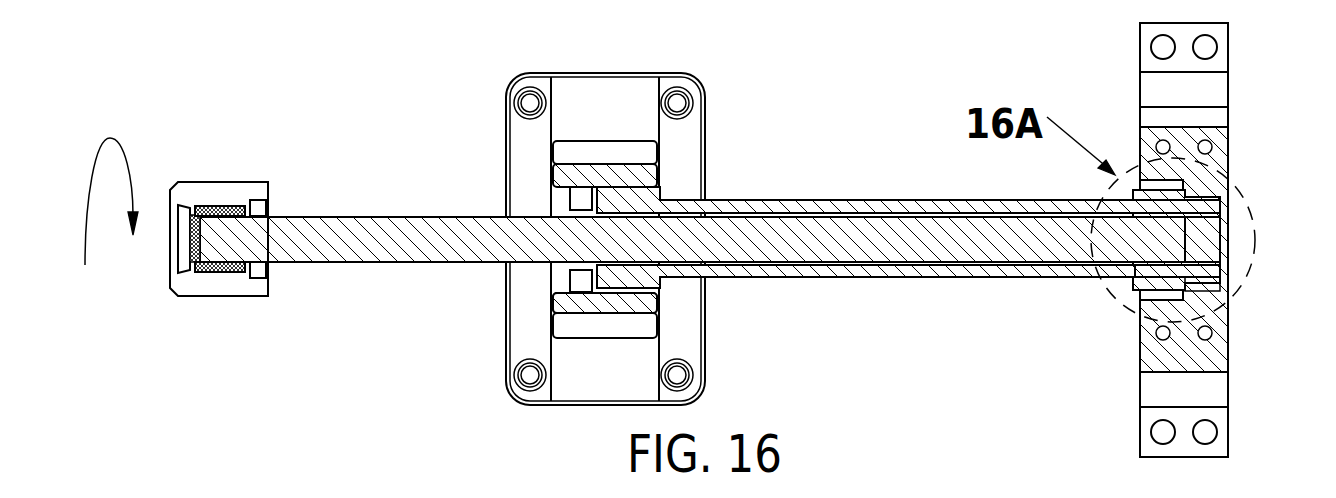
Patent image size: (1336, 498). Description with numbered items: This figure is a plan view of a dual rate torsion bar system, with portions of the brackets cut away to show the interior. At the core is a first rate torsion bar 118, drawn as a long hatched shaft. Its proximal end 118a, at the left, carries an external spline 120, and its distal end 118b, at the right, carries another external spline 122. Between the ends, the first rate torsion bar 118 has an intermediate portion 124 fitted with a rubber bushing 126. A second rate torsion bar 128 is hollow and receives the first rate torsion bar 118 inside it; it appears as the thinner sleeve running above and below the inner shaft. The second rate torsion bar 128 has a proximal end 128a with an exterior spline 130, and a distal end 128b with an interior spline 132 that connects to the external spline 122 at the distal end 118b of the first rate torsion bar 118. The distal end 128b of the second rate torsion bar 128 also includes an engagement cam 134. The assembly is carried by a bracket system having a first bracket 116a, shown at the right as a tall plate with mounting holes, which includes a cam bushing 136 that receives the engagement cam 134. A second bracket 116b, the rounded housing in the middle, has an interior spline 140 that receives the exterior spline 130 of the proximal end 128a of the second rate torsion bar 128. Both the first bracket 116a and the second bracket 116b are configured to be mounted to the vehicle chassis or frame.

The first bracket 116a is at (1160, 78).
The second bracket 116b is at (603, 73).
The first rate torsion bar 118 is at (425, 248).
The proximal end 118a is at (232, 248).
The distal end 118b is at (1222, 225).
The external spline 120 is at (222, 208).
The external spline 122 is at (1190, 218).
The intermediate portion 124 is at (578, 262).
The rubber bushing 126 is at (580, 198).
The second rate torsion bar 128 is at (940, 272).
The proximal end 128a is at (640, 205).
The distal end 128b is at (1222, 268).
The exterior spline 130 is at (613, 190).
The interior spline 132 is at (1140, 270).
The engagement cam 134 is at (1225, 288).
The cam bushing 136 is at (1198, 275).
The interior spline 140 is at (1158, 300).